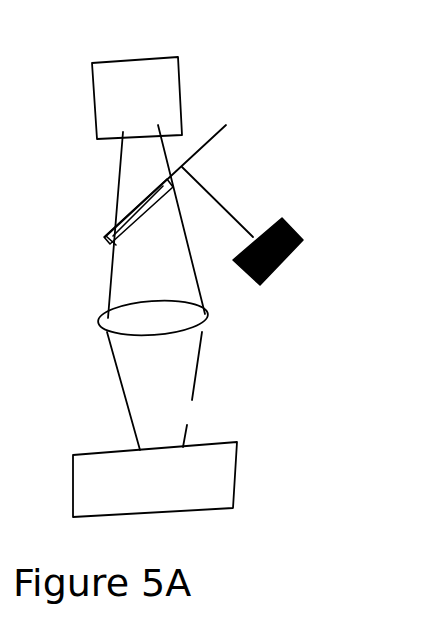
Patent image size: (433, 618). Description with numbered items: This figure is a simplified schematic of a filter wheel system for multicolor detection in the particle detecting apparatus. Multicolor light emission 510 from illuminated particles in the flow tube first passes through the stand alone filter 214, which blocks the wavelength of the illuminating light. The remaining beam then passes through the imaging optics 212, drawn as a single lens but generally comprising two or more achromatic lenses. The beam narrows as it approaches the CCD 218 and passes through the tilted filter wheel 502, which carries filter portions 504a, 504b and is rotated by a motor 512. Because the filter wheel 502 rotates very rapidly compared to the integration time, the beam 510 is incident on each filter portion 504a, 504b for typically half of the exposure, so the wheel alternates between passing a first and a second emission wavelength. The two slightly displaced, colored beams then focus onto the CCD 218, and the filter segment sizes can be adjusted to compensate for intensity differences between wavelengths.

The CCD 218 is at (177, 58).
The filter wheel 502 is at (230, 133).
The filter portion 504a is at (197, 150).
The filter portion 504b is at (112, 244).
The motor 512 is at (283, 217).
The imaging optics 212 is at (207, 315).
The multicolor light emission 510 is at (175, 380).
The stand alone filter 214 is at (155, 479).